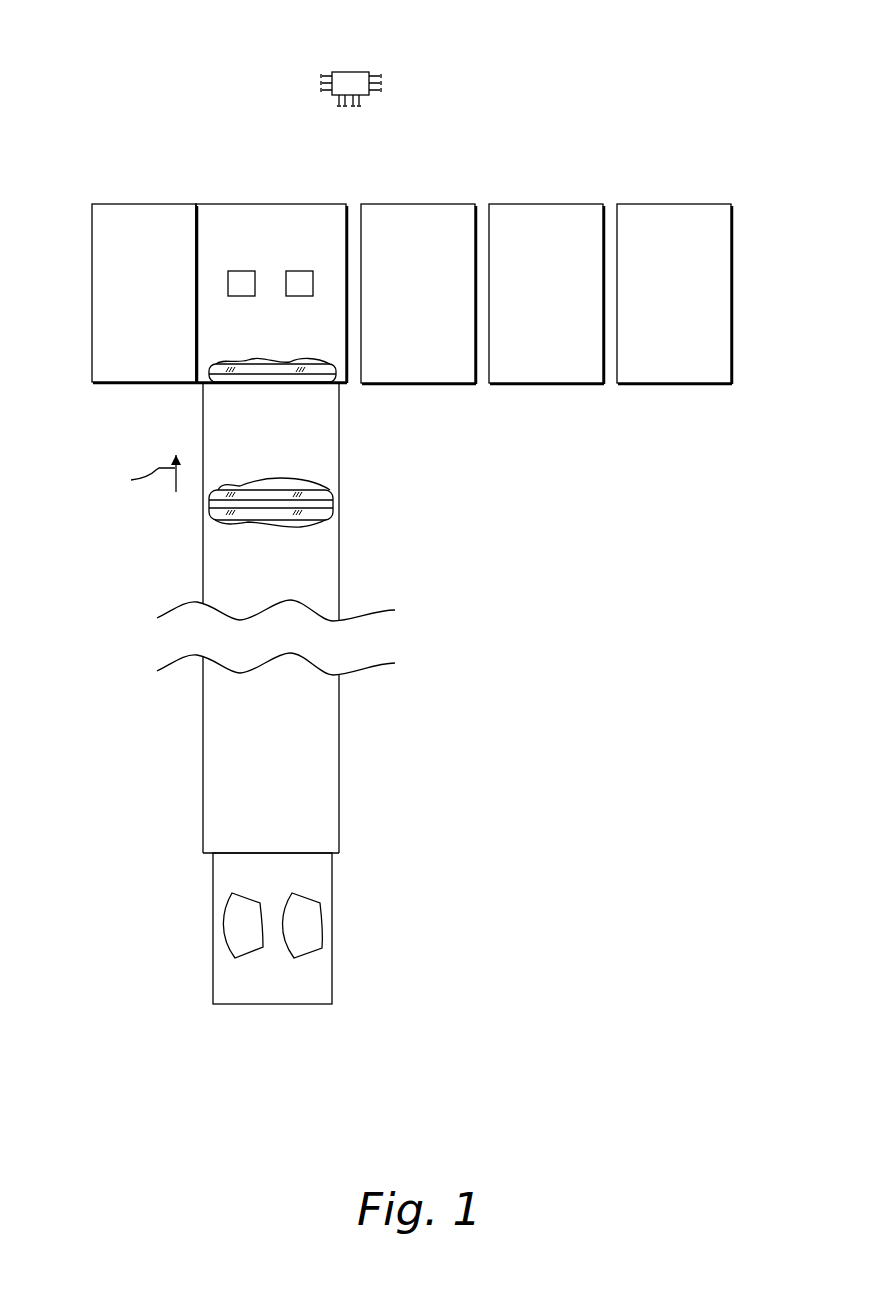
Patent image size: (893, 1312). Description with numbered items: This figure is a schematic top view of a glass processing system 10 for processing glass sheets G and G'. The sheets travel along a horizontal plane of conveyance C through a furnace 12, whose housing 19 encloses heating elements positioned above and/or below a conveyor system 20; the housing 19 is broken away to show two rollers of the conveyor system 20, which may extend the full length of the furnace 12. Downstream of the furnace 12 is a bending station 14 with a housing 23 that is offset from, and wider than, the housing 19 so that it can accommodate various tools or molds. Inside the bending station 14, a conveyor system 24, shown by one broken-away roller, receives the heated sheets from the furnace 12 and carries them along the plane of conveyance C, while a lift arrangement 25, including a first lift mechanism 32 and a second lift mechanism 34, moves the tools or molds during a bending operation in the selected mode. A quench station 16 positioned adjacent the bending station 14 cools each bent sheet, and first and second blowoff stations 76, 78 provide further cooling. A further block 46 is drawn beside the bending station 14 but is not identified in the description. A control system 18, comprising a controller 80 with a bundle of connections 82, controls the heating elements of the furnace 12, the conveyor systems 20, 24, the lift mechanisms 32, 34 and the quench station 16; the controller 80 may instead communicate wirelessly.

The glass processing system 10 is at (240, 693).
The furnace 12 is at (196, 534).
The bending station 14 is at (279, 324).
The quench station 16 is at (456, 402).
The control system 18 is at (379, 73).
The housing 19 is at (338, 494).
The conveyor system 20 is at (320, 530).
The housing 23 is at (341, 204).
The conveyor system 24 is at (302, 392).
The lift arrangement 25 is at (249, 220).
The first lift mechanism 32 is at (247, 271).
The second lift mechanism 34 is at (307, 271).
The module 46 is at (128, 394).
The first blowoff station 76 is at (583, 402).
The second blowoff station 78 is at (709, 402).
The controller 80 is at (346, 72).
The bundle of connections 82 is at (376, 108).